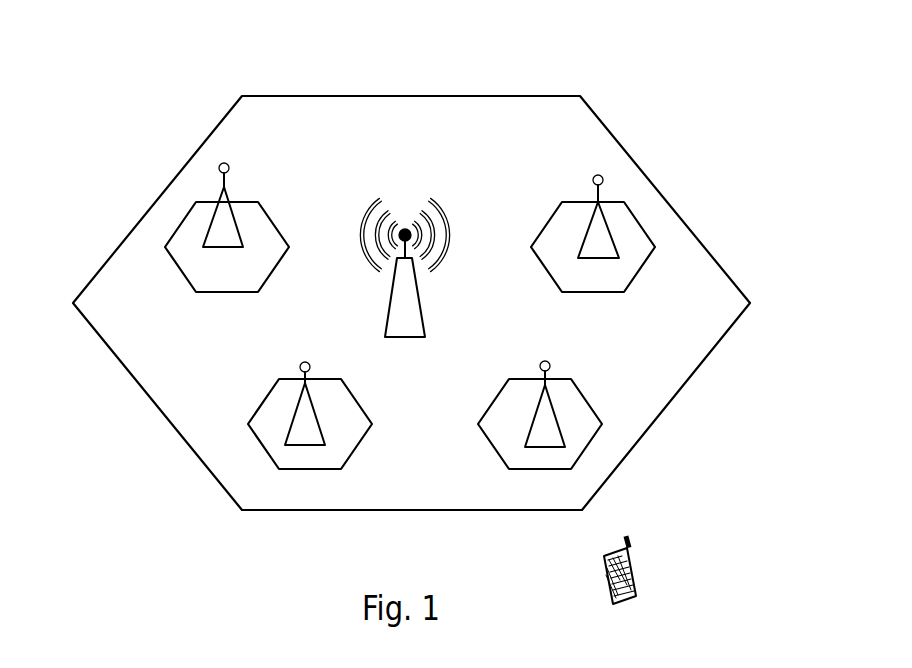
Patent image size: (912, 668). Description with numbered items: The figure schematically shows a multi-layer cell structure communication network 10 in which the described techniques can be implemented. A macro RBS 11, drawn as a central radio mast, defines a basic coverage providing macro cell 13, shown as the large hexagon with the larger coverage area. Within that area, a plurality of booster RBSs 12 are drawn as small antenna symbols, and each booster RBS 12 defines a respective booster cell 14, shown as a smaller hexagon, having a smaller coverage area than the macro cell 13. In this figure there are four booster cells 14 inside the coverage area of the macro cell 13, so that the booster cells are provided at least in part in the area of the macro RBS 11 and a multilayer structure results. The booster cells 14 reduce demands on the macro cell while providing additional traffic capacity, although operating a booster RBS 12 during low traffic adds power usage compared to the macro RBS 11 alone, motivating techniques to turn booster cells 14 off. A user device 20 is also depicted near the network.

The wireless communication system 10 is at (542, 56).
The macro RBS 11 is at (417, 337).
The booster RBS 12 is at (237, 228).
The macro cell 13 is at (411, 303).
The booster cell 14 is at (165, 247).
The user equipment 20 is at (637, 570).